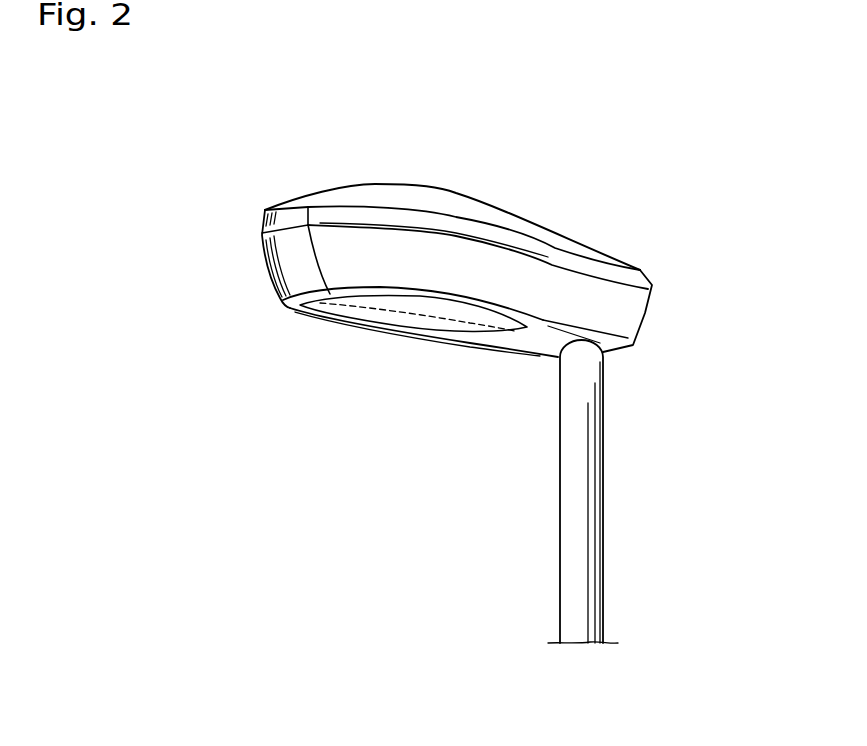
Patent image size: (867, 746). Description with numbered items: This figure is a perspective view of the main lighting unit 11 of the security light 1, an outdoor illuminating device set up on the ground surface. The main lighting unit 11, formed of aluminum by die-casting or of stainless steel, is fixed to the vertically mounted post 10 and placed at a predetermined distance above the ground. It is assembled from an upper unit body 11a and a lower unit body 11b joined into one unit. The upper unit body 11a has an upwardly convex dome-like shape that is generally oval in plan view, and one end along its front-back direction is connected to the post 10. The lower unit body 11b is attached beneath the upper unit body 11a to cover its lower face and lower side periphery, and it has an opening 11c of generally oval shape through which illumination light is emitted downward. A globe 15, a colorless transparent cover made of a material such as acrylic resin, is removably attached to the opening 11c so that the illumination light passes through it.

The security light 1 is at (190, 181).
The post 10 is at (558, 548).
The main lighting unit 11 is at (573, 208).
The upper unit body 11a is at (452, 194).
The lower unit body 11b is at (275, 298).
The opening 11c is at (432, 338).
The globe 15 is at (338, 320).